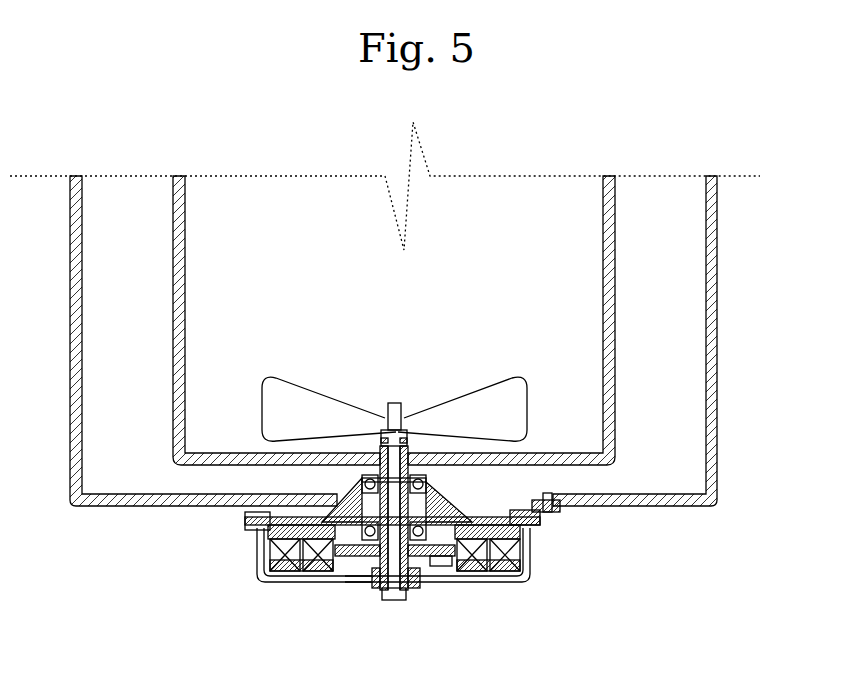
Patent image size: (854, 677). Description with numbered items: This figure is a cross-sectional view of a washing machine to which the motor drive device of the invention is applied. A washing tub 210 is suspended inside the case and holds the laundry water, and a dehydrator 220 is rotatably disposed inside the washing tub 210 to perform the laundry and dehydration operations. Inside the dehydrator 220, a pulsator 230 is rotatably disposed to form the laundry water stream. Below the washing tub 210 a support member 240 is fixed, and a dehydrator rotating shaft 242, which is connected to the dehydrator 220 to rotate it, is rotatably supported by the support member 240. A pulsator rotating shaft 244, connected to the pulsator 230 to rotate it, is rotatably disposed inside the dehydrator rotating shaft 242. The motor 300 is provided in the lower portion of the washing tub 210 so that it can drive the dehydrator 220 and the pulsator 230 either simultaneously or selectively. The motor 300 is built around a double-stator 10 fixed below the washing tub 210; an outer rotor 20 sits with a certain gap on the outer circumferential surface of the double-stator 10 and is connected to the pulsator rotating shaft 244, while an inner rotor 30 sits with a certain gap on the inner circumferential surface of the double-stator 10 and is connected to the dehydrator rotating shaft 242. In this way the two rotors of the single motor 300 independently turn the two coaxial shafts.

The double-stator 10 is at (325, 575).
The outer rotor 20 is at (541, 538).
The inner rotor 30 is at (437, 566).
The washing tub 210 is at (712, 392).
The dehydrator 220 is at (614, 293).
The pulsator 230 is at (512, 414).
The support member 240 is at (452, 503).
The dehydrator rotating shaft 242 is at (404, 478).
The pulsator rotating shaft 244 is at (428, 484).
The motor 300 is at (545, 558).